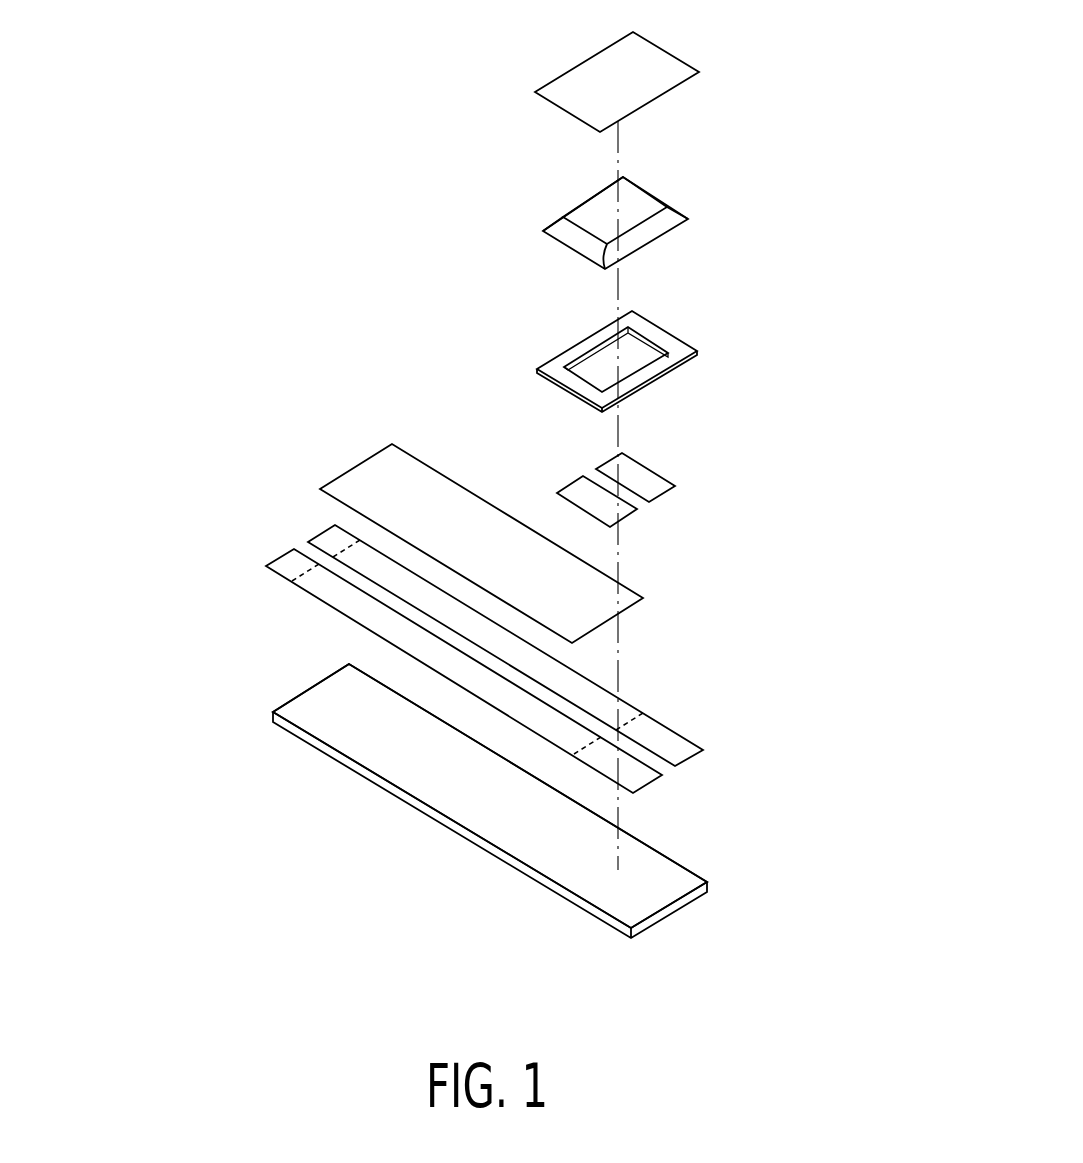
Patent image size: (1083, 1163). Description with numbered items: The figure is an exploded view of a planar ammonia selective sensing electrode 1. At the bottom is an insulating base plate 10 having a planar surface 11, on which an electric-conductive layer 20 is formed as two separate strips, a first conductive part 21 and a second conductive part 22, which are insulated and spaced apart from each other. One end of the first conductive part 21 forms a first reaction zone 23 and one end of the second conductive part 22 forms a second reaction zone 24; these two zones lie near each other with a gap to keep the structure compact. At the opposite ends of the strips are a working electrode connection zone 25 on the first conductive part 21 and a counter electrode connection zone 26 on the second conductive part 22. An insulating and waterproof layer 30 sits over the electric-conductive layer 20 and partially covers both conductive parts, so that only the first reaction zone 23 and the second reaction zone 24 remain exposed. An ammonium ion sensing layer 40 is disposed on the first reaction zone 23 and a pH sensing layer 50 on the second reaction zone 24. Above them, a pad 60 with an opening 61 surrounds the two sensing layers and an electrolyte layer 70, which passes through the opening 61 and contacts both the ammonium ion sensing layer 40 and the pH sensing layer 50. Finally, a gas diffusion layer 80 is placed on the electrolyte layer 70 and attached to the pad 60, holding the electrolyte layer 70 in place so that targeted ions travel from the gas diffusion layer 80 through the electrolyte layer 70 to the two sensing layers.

The planar ammonia selective sensing electrode 1 is at (852, 31).
The insulating base plate 10 is at (462, 801).
The planar surface 11 is at (347, 719).
The electric-conductive layer 20 is at (422, 632).
The first conductive part 21 is at (452, 653).
The second conductive part 22 is at (458, 600).
The first reaction zone 23 is at (637, 780).
The second reaction zone 24 is at (678, 750).
The working electrode connection zone 25 is at (290, 560).
The counter electrode connection zone 26 is at (333, 538).
The insulating and waterproof layer 30 is at (378, 473).
The ammonium ion sensing layer 40 is at (618, 509).
The pH sensing layer 50 is at (645, 485).
The pad 60 is at (603, 358).
The opening 61 is at (642, 353).
The electrolyte layer 70 is at (565, 230).
The gas diffusion layer 80 is at (582, 80).